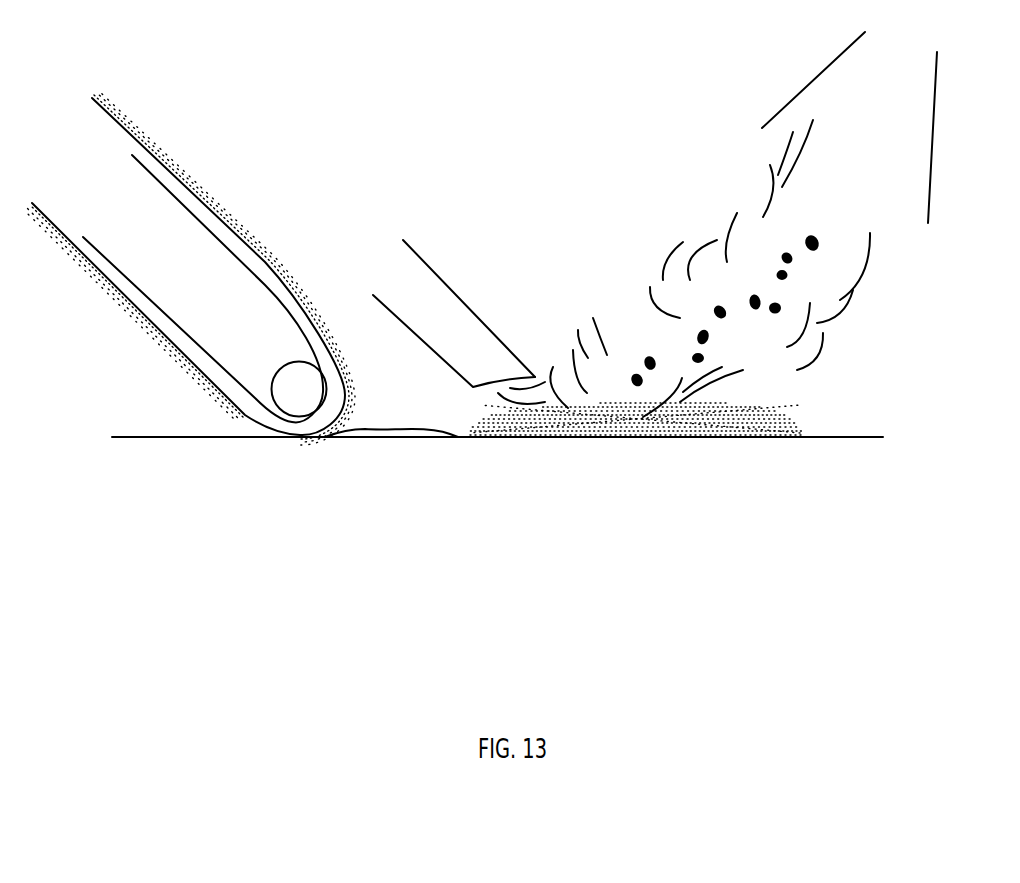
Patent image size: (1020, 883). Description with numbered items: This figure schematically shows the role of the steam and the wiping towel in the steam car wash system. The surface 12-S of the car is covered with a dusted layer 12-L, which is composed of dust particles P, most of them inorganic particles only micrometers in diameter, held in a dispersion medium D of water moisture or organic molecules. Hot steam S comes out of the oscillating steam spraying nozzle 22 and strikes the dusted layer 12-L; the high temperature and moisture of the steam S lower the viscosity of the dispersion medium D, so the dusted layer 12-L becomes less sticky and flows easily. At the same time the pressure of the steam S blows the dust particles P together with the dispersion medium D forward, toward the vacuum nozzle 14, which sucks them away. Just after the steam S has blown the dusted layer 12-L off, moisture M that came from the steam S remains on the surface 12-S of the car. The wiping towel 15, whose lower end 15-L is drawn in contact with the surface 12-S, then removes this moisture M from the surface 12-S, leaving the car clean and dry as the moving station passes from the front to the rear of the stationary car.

The wiping towel 15 is at (105, 125).
The lower end of applicator tool 15-L is at (295, 425).
The vacuum nozzle 14 is at (843, 45).
The oscillating steam spraying nozzle 22 is at (420, 288).
The dust particles P is at (818, 242).
The dusted layer 12-L is at (737, 410).
The dispersion medium D is at (758, 427).
The surface of the car 12-S is at (767, 442).
The hot steam S is at (508, 393).
The moisture M is at (398, 437).